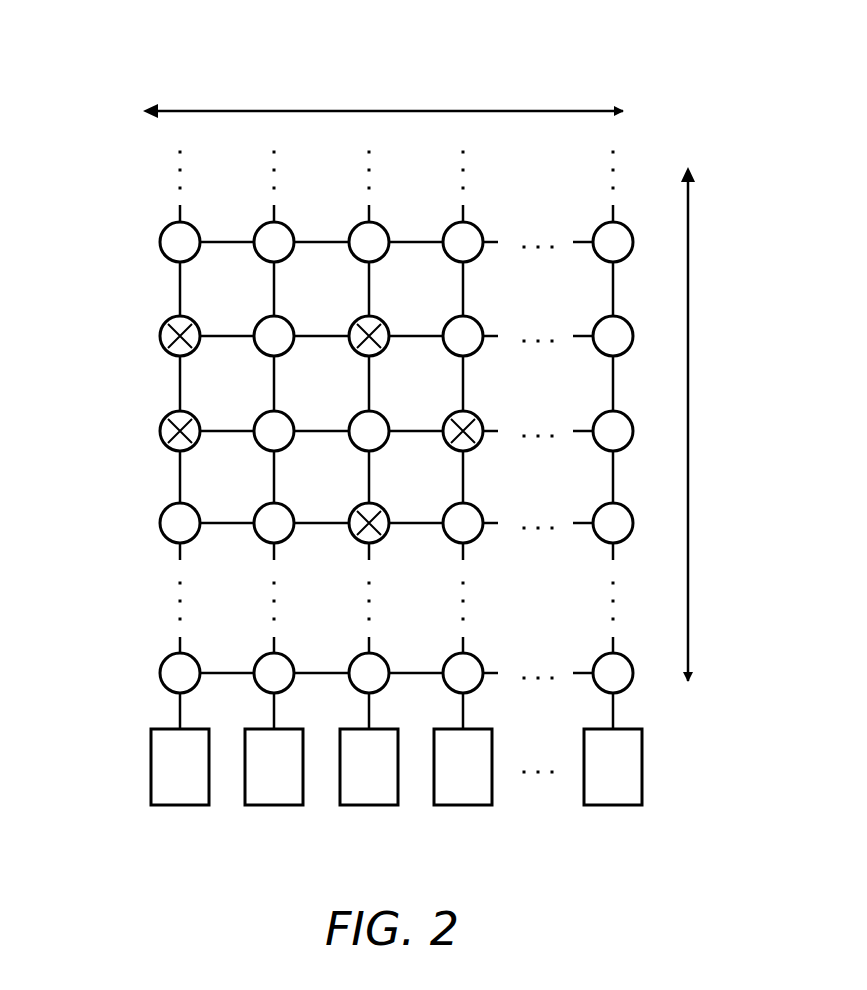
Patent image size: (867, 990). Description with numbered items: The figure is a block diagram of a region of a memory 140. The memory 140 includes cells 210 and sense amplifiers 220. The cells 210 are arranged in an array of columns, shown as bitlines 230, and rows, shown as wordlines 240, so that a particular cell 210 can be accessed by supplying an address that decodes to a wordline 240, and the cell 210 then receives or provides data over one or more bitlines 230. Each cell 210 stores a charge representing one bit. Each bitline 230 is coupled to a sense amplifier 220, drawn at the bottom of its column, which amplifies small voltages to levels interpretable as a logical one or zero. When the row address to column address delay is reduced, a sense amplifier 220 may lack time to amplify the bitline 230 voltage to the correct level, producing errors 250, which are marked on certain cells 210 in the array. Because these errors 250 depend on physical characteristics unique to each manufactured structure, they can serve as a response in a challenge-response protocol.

The memory 140 is at (110, 72).
The cells 210 is at (612, 242).
The sense amplifiers 220 is at (296, 792).
The bitlines 230 is at (688, 338).
The wordlines 240 is at (555, 111).
The errors 250 is at (182, 344).